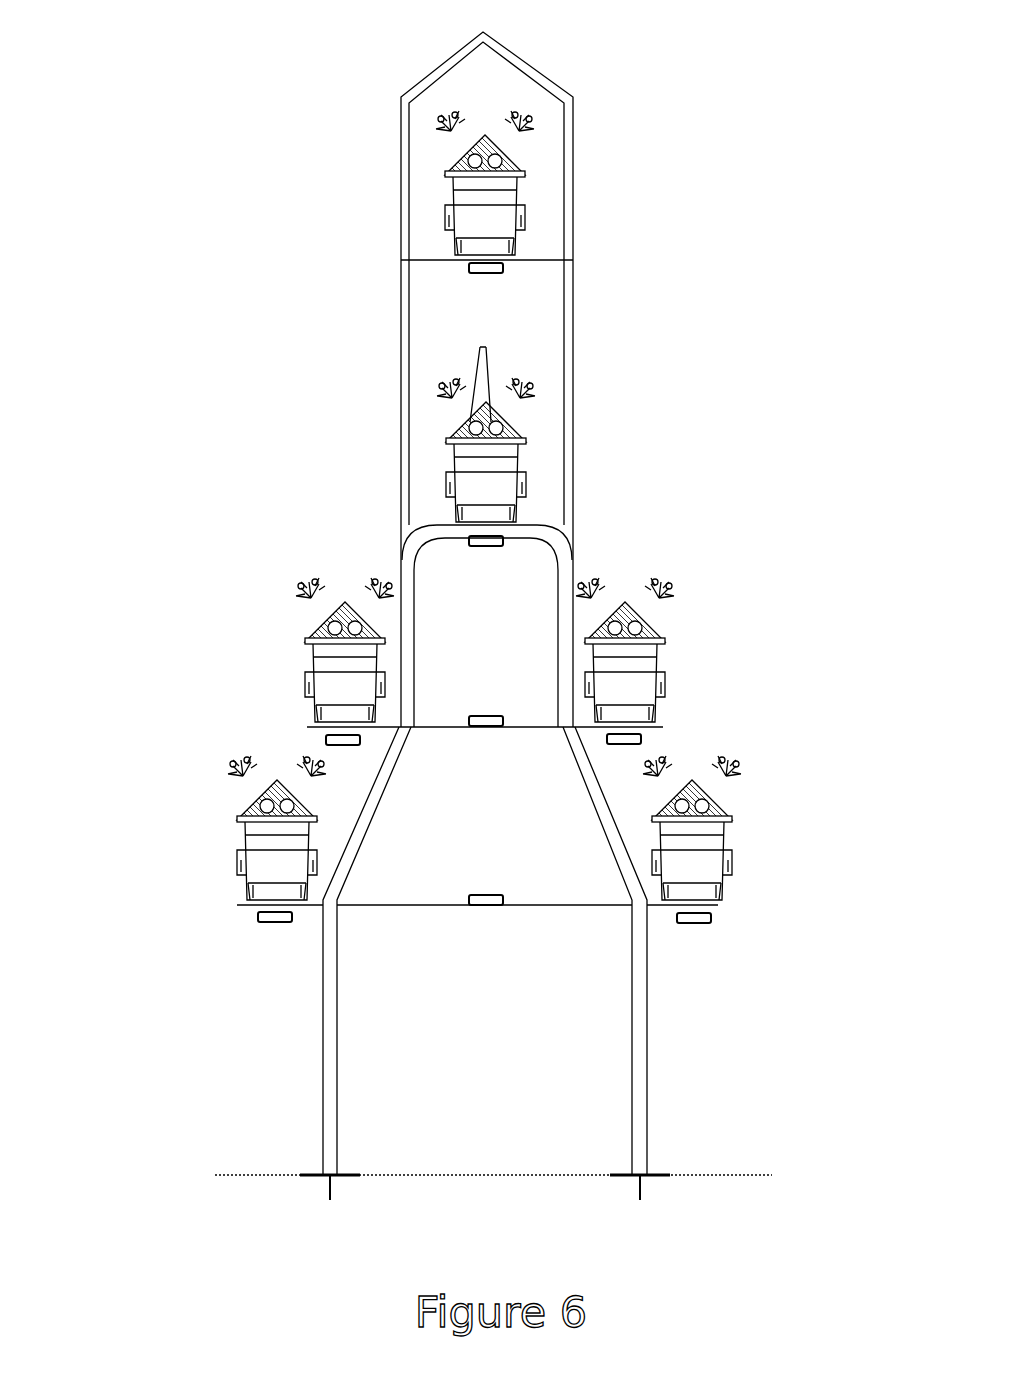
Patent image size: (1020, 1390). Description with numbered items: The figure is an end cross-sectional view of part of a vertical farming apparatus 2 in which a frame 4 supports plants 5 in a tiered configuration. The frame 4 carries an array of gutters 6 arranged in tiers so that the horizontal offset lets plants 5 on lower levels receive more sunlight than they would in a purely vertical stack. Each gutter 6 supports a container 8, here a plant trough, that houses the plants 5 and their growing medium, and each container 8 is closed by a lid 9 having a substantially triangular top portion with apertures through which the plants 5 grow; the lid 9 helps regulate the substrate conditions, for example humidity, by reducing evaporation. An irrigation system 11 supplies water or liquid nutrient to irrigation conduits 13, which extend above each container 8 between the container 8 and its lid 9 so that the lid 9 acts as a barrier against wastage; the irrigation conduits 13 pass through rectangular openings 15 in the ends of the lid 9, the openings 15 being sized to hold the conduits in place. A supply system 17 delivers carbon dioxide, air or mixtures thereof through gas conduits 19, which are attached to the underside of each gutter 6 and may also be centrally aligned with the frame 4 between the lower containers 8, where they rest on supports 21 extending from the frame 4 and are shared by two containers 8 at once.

The vertical farming apparatus 2 is at (238, 200).
The frame 4 is at (570, 318).
The plants 5 is at (325, 612).
The gutters 6 is at (305, 725).
The container 8 is at (470, 478).
The lid 9 is at (692, 775).
The irrigation system 11 is at (480, 142).
The irrigation conduits 13 is at (478, 365).
The openings 15 is at (668, 800).
The supply system 17 is at (475, 733).
The gas conduits 19 is at (503, 543).
The supports 21 is at (373, 903).